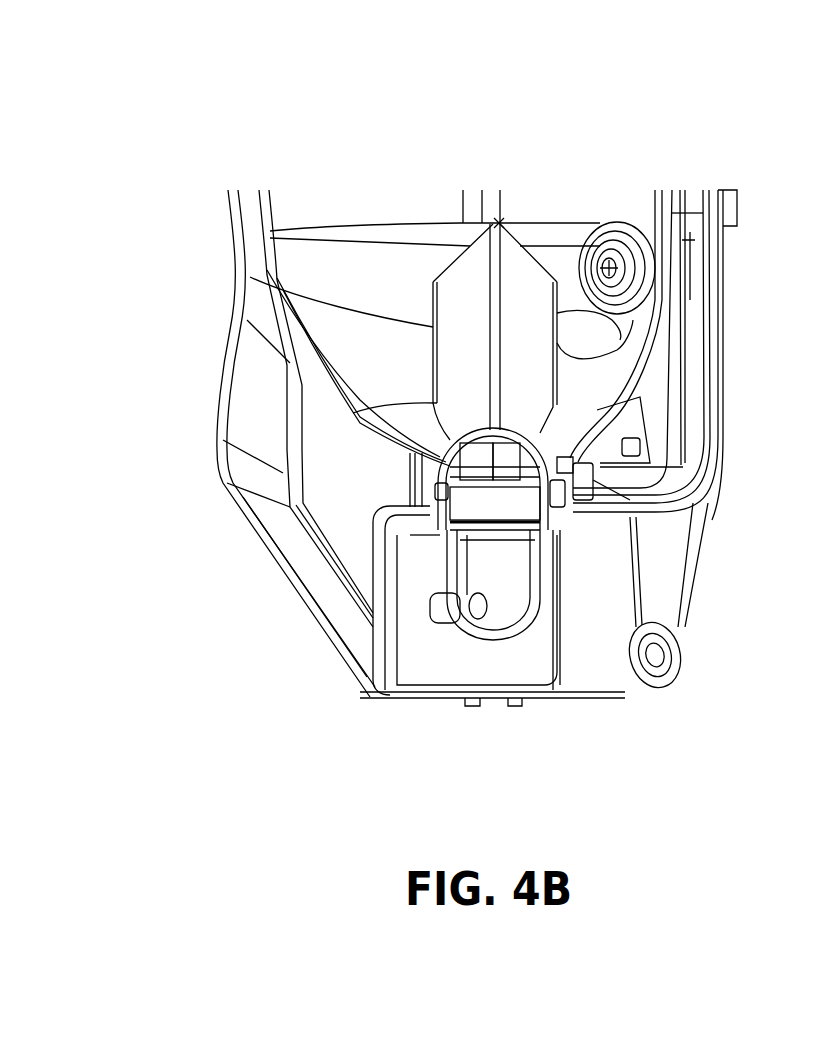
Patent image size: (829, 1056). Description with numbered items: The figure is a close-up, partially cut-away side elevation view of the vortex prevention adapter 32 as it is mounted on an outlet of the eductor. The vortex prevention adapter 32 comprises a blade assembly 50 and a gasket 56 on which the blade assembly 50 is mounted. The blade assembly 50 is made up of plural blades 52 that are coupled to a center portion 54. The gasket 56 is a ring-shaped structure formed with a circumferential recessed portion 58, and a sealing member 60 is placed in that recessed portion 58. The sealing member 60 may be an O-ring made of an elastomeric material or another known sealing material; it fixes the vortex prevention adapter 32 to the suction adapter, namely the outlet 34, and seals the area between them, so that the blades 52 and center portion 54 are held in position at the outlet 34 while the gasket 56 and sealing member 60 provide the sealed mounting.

The vortex prevention adapter 32 is at (480, 175).
The outlet 34 is at (508, 555).
The blade assembly 50 is at (425, 363).
The blades 52 is at (468, 305).
The center portion 54 is at (500, 222).
The gasket 56 is at (473, 497).
The circumferential recessed portion 58 is at (557, 508).
The sealing member 60 is at (435, 495).